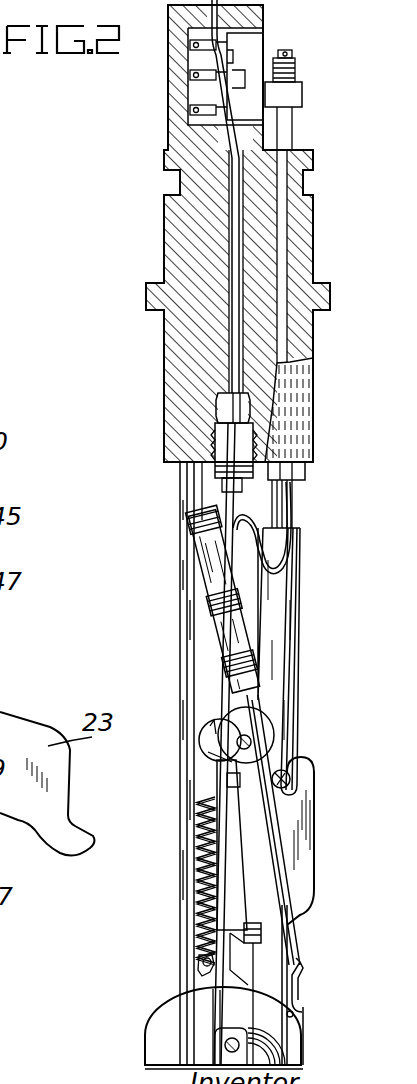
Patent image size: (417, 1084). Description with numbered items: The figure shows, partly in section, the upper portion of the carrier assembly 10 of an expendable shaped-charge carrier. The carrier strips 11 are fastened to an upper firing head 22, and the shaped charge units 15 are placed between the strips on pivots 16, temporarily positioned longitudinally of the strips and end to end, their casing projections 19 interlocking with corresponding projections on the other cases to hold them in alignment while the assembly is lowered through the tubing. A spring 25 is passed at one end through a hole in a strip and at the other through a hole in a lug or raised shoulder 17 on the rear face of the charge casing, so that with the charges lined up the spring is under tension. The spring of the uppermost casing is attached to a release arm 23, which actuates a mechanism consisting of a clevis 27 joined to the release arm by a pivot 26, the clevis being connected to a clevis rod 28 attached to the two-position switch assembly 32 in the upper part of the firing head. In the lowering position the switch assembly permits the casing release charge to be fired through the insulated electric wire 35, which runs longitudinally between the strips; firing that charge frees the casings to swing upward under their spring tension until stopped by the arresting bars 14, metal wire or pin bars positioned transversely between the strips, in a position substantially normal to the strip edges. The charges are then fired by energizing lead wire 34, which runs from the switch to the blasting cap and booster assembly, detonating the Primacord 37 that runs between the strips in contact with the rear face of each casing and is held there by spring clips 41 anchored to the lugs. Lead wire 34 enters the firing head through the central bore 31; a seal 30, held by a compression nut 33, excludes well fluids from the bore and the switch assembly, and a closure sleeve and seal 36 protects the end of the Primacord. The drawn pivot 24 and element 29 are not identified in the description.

The burner assembly 10 is at (333, 472).
The carrier strips 11 is at (187, 615).
The arresting bars 14 is at (202, 963).
The shaped charge units 15 is at (187, 1012).
The pivots 16 is at (227, 1045).
The lug or raised shoulder 17 is at (295, 1038).
The projections 19 is at (262, 962).
The upper firing head 22 is at (163, 366).
The release arm 23 is at (297, 847).
The cam disc 24 is at (205, 742).
The spring 25 is at (197, 888).
The pivot 26 is at (284, 778).
The clevis 27 is at (290, 578).
The clevis rod 28 is at (280, 498).
The pivot 29 is at (232, 738).
The seal 30 is at (222, 408).
The central bore 31 is at (228, 253).
The two-position switch assembly 32 is at (253, 50).
The compression nut 33 is at (212, 470).
The lead wire 34 is at (232, 493).
The insulated electric wire 35 is at (292, 515).
The closure sleeve and seal 36 is at (200, 543).
The Primacord 37 is at (275, 890).
The spring clips 41 is at (300, 990).